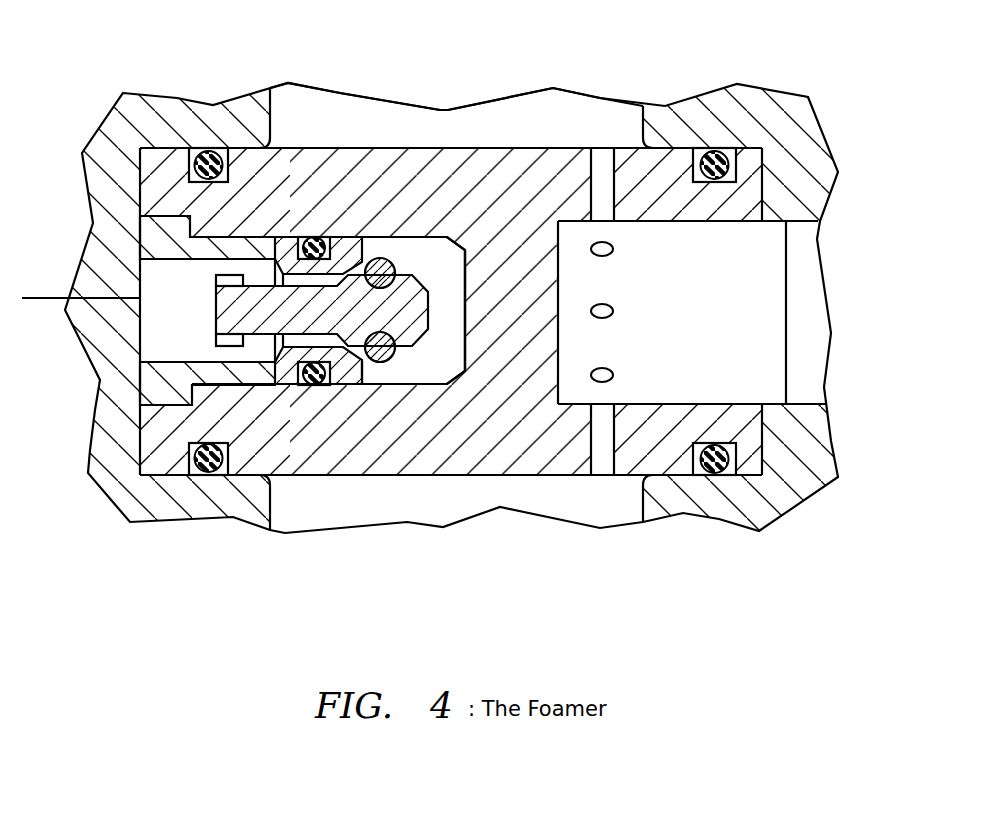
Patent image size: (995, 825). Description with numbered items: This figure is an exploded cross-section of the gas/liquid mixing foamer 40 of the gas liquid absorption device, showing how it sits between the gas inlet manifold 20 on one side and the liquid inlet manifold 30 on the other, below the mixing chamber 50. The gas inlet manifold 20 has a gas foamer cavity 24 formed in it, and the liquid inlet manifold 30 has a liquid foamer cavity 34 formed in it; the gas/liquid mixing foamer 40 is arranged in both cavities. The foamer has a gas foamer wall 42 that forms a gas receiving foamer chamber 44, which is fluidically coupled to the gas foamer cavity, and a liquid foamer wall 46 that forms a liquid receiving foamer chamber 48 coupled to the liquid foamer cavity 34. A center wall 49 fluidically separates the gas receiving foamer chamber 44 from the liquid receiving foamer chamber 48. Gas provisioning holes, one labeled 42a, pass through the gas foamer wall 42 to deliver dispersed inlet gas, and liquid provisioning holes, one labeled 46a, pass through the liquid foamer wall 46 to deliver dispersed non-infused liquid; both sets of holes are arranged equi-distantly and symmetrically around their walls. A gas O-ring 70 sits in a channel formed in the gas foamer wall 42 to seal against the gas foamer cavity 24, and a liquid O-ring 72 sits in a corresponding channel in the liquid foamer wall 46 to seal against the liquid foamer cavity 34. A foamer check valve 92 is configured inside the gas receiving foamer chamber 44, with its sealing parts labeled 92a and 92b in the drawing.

The gas inlet manifold 20 is at (103, 121).
The gas foamer cavity 24 is at (158, 146).
The liquid inlet manifold 30 is at (822, 126).
The liquid foamer cavity 34 is at (737, 146).
The gas/liquid mixing foamer 40 is at (466, 430).
The gas foamer wall 42 is at (375, 235).
The gas provisioning hole 42a is at (428, 246).
The gas receiving foamer chamber 44 is at (410, 388).
The liquid foamer wall 46 is at (642, 219).
The liquid provisioning hole 46a is at (587, 307).
The liquid receiving foamer chamber 48 is at (667, 380).
The center wall 49 is at (501, 340).
The mixing chamber 50 is at (448, 107).
The gas O-ring 70 is at (212, 478).
The liquid O-ring 72 is at (716, 480).
The foamer check valve 92 is at (212, 323).
The lower ball seal 92a is at (373, 362).
The upper O-ring 92b is at (311, 235).